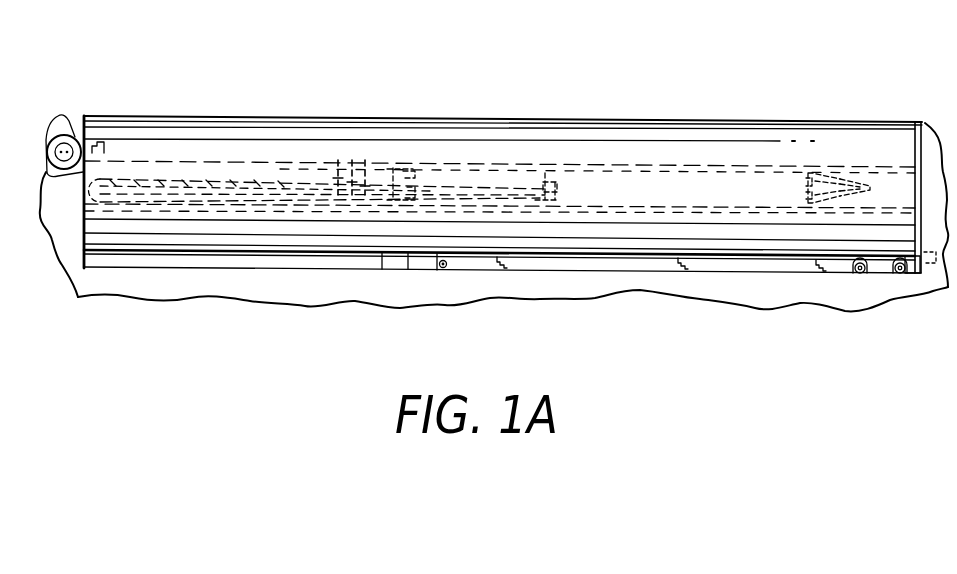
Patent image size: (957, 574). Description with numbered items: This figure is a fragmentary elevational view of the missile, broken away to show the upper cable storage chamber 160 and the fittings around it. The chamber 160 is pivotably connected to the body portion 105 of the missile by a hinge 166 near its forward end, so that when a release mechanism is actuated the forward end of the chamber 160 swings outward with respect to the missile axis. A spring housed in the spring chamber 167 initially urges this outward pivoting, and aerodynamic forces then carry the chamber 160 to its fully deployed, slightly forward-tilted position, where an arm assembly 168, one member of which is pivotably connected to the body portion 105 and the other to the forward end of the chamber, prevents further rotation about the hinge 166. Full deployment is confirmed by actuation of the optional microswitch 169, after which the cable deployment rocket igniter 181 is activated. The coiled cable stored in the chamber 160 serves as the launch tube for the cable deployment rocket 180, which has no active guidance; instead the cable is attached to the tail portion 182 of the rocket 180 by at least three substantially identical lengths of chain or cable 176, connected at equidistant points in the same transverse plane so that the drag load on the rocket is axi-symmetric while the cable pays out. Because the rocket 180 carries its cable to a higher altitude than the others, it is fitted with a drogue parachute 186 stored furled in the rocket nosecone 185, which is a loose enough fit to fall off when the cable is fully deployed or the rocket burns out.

The body portion 105 is at (82, 272).
The cable storage chamber 160 is at (233, 122).
The hinge 166 is at (76, 132).
The spring chamber 167 is at (395, 262).
The arm assembly 168 is at (733, 265).
The microswitch 169 is at (100, 140).
The lengths of chain or cable 176 is at (358, 152).
The cable deployment rocket 180 is at (682, 177).
The cable deployment rocket igniter 181 is at (548, 173).
The tail portion 182 is at (393, 168).
The rocket nosecone 185 is at (852, 175).
The drogue parachute 186 is at (825, 175).